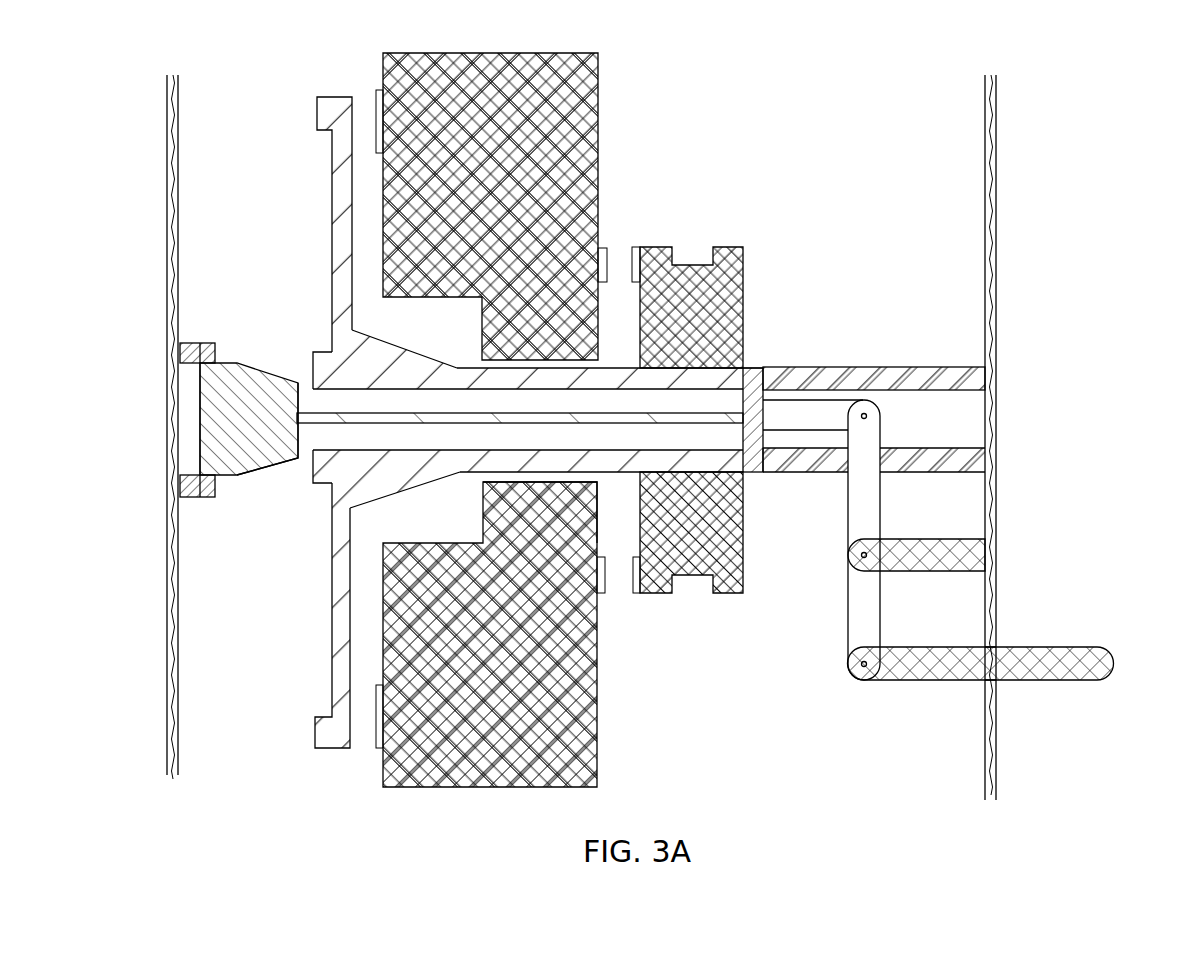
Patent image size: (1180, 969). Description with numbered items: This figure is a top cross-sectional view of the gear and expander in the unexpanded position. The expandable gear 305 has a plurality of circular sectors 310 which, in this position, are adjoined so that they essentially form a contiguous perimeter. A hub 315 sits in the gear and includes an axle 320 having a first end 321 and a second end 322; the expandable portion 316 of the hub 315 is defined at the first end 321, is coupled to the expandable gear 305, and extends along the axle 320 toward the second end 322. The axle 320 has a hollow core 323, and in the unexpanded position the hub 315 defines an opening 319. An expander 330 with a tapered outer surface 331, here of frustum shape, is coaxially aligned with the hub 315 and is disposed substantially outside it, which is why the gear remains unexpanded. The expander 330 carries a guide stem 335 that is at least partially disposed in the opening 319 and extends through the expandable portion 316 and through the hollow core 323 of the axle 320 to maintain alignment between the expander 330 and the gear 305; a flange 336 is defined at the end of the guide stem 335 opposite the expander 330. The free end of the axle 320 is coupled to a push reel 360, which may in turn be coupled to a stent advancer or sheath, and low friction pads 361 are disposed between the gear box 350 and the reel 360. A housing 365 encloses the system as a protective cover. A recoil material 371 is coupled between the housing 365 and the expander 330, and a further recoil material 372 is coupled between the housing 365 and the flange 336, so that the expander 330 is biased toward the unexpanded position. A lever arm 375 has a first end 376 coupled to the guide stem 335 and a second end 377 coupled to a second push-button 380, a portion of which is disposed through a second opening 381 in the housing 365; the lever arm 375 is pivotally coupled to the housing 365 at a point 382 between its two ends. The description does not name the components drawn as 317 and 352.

The expandable gear 305 is at (327, 221).
The plurality of circular sectors 310 is at (343, 673).
The hub 315 is at (420, 341).
The expandable portion 316 is at (360, 372).
The lower wall of outer tube 317 is at (377, 472).
The opening 319 is at (313, 437).
The axle 320 is at (598, 465).
The first end 321 is at (307, 352).
The second end 322 is at (747, 354).
The hollow core 323 is at (443, 437).
The expander 330 is at (222, 433).
The tapered outer surface 331 is at (265, 470).
The guide stem 335 is at (375, 422).
The flange 336 is at (752, 378).
The gear box 350 is at (580, 167).
The lower insulating block 352 is at (375, 738).
The push reel 360 is at (725, 253).
The low friction pads 361 is at (637, 247).
The housing 365 is at (172, 170).
The recoil material 371 is at (180, 480).
The recoil material 372 is at (823, 373).
The lever arm 375 is at (867, 498).
The first end 376 is at (890, 408).
The second end 377 is at (885, 685).
The second push-button 380 is at (1082, 662).
The second opening 381 is at (993, 647).
The point 382 is at (873, 562).